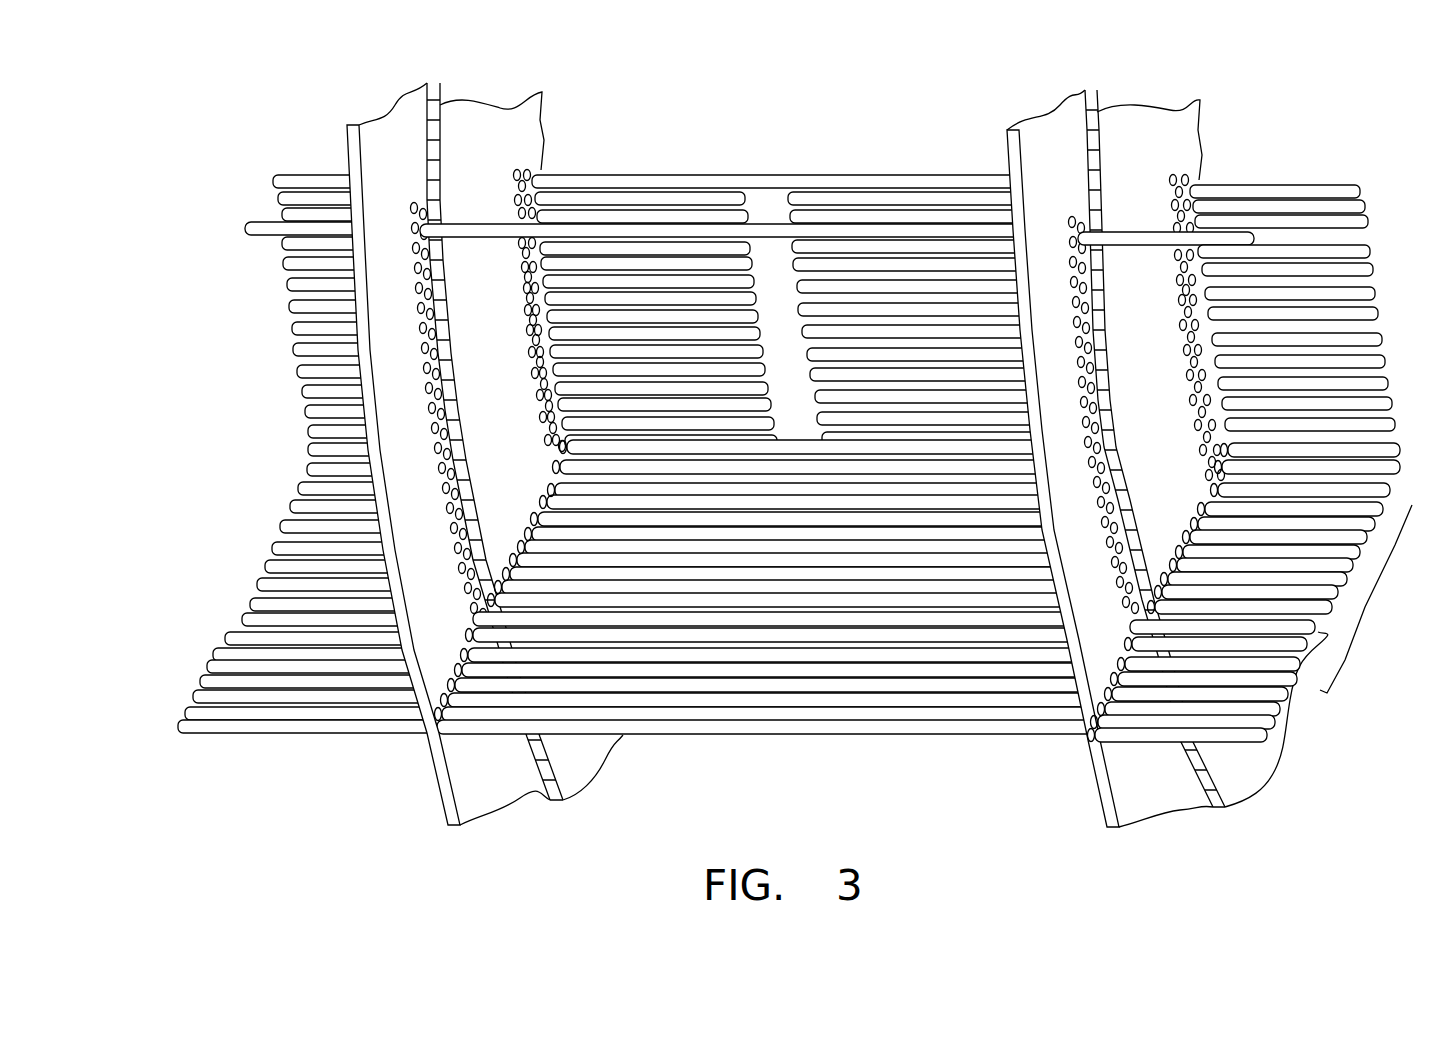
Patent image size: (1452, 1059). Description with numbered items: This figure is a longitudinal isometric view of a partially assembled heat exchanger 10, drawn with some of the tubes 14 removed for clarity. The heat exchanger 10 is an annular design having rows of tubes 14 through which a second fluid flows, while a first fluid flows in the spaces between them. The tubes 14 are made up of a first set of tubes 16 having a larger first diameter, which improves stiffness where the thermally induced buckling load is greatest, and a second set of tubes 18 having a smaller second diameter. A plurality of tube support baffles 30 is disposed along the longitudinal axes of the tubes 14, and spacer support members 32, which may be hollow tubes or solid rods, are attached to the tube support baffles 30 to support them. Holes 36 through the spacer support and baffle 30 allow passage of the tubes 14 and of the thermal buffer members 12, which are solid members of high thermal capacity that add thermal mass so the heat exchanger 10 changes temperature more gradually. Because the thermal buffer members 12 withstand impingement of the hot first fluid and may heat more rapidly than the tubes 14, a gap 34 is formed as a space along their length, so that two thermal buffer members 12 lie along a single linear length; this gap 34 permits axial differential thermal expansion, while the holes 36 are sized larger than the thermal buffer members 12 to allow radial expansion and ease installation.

The heat exchanger 10 is at (290, 95).
The thermal buffer members 12 is at (722, 210).
The tubes 14 is at (1353, 612).
The first set of tubes 16 is at (1222, 493).
The second set of tubes 18 is at (802, 726).
The tube support baffles 30 is at (422, 485).
The spacer support members 32 is at (262, 228).
The gap 34 is at (762, 215).
The holes 36 is at (518, 308).